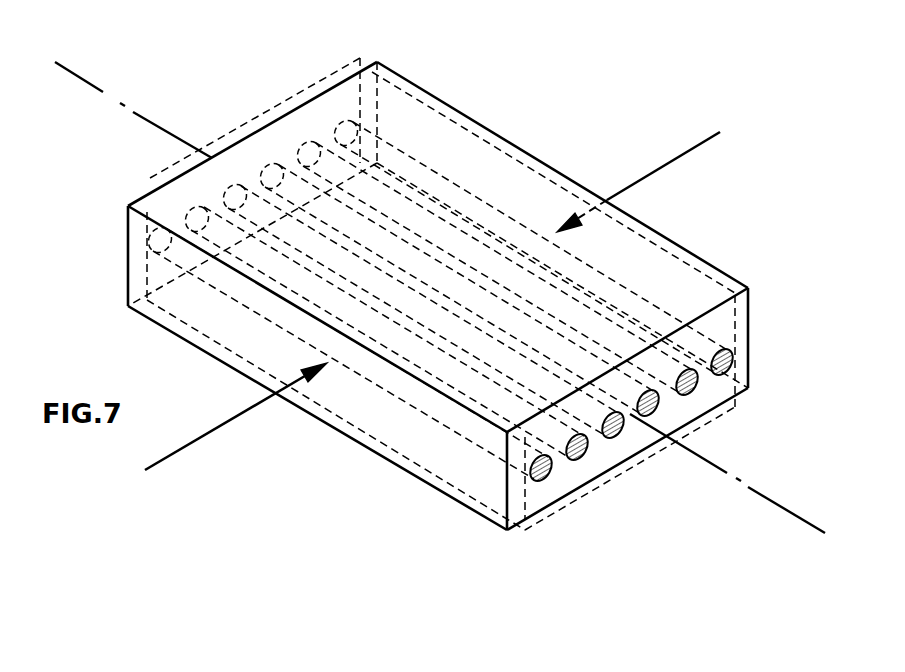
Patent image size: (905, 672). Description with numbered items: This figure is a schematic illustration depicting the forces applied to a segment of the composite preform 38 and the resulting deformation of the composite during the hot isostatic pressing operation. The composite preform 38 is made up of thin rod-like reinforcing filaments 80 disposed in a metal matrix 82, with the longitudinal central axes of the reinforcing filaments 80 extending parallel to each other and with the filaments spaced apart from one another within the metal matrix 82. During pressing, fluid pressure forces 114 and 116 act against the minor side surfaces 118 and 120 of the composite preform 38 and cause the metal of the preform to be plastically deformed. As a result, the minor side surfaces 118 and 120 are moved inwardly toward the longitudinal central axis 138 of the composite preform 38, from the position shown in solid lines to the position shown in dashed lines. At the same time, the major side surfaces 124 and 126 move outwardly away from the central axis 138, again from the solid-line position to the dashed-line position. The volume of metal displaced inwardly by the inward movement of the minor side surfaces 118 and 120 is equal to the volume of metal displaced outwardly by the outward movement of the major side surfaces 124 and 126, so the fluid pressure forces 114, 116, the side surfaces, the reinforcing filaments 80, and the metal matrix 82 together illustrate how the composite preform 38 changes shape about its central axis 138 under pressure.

The composite preform 38 is at (381, 55).
The reinforcing filaments 80 is at (610, 438).
The metal matrix 82 is at (756, 326).
The fluid pressure force 114 is at (202, 436).
The fluid pressure force 116 is at (694, 150).
The minor side surface 118 is at (408, 430).
The minor side surface 120 is at (707, 267).
The major side surface 124 is at (544, 192).
The major side surface 126 is at (212, 342).
The longitudinal central axis 138 is at (768, 497).